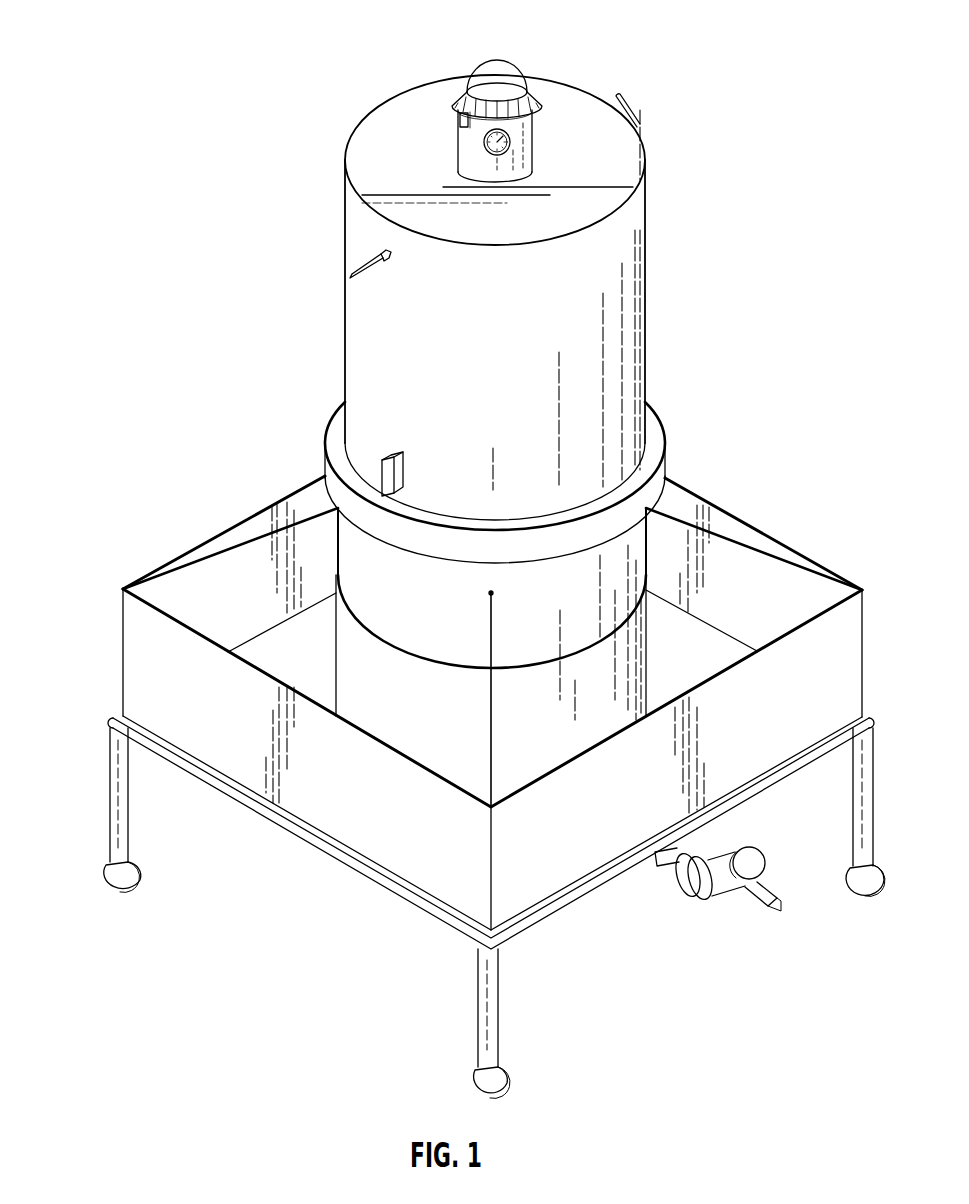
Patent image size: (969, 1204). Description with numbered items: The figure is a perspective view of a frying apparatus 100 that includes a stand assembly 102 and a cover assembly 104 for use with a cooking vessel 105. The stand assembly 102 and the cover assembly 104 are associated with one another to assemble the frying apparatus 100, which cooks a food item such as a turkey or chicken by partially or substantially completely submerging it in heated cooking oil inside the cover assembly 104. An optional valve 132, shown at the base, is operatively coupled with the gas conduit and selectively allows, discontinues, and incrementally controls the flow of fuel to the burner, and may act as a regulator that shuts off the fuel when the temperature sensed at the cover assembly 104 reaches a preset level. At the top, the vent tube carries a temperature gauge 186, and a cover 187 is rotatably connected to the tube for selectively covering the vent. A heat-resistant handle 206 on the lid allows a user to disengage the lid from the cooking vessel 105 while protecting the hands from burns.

The frying apparatus 100 is at (240, 46).
The stand assembly 102 is at (113, 652).
The cover assembly 104 is at (647, 342).
The cooking vessel 105 is at (647, 527).
The valve 132 is at (757, 862).
The temperature gauge 186 is at (510, 140).
The cover 187 is at (506, 63).
The heat-resistant handle 206 is at (388, 458).